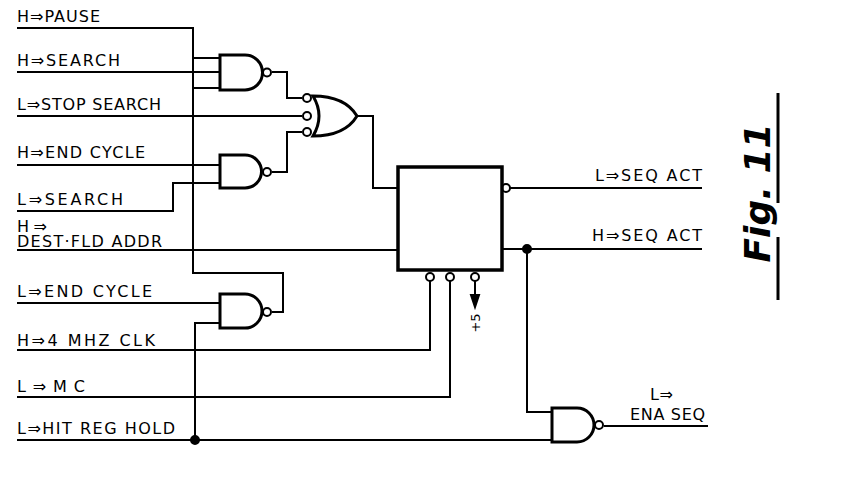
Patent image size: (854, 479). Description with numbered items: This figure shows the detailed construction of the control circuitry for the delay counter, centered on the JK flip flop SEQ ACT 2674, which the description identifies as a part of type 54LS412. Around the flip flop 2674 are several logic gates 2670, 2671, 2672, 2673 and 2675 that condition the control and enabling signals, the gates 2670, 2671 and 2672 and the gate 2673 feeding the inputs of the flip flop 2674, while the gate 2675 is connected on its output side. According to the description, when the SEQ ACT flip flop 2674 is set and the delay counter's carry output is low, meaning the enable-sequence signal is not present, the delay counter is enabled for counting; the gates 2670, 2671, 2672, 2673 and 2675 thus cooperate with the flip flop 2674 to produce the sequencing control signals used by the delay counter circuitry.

The NAND gate 2670 is at (260, 326).
The NAND gate 2671 is at (257, 190).
The NAND gate 2672 is at (252, 55).
The NOR gate (OR gate with inverting inputs) 2673 is at (348, 96).
The SEQ ACT JK flip flop 2674 is at (423, 165).
The NAND gate 2675 is at (578, 408).